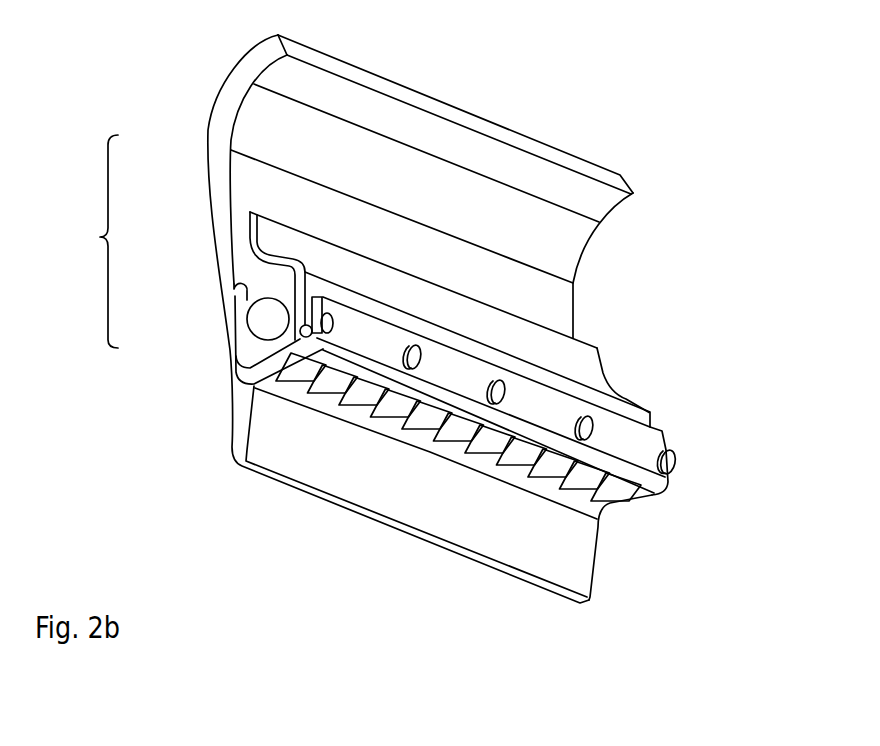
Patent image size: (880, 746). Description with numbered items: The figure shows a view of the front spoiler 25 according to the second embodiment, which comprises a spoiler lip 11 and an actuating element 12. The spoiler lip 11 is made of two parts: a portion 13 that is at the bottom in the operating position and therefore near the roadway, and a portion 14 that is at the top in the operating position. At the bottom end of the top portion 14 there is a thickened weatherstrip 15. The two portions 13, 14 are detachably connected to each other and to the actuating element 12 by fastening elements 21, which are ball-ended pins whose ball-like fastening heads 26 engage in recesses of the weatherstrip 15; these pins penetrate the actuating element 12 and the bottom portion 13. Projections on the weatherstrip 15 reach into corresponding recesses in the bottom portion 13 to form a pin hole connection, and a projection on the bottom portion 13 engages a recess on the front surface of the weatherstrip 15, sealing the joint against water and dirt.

The spoiler lip 11 is at (98, 241).
The actuating element 12 is at (586, 368).
The bottom portion of the spoiler lip 13 is at (231, 344).
The top portion of the spoiler lip 14 is at (208, 143).
The weatherstrip 15 is at (252, 349).
The fastening elements 21 is at (678, 461).
The front spoiler 25 is at (692, 242).
The ball-like fastening heads 26 is at (298, 337).